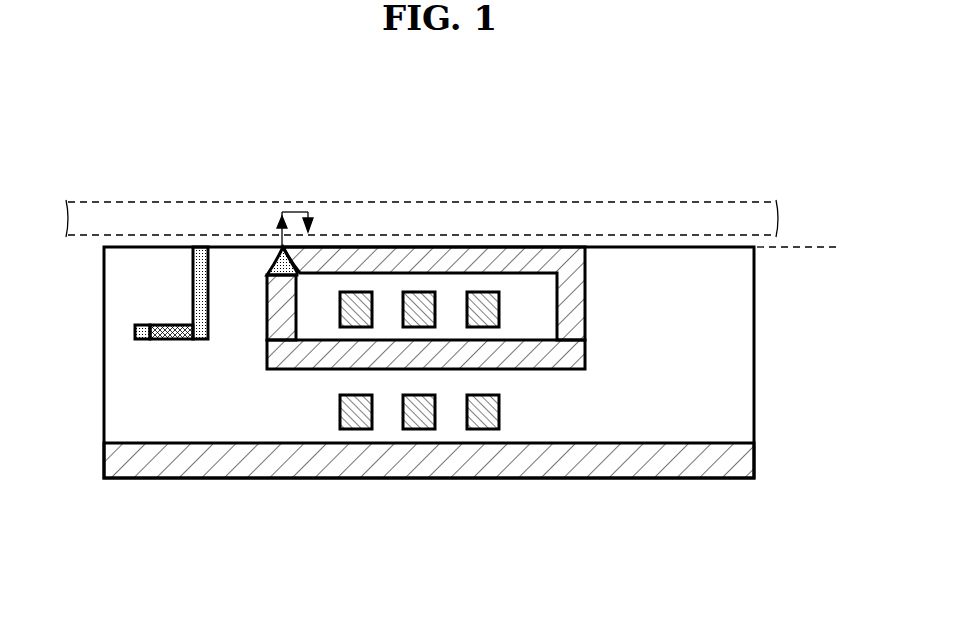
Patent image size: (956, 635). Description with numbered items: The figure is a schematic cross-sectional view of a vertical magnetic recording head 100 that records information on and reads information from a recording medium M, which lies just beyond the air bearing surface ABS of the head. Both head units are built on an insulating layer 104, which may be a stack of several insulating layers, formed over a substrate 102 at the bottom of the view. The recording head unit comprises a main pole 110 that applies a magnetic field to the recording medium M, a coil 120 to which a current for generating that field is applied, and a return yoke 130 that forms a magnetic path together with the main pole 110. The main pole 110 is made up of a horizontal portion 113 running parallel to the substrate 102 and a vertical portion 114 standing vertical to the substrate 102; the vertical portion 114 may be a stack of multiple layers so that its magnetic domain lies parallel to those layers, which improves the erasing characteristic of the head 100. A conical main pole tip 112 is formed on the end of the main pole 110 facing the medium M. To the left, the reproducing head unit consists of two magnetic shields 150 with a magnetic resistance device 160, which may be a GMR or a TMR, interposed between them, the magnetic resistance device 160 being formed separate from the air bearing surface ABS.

The vertical magnetic recording head 100 is at (107, 173).
The substrate 102 is at (745, 468).
The insulating layer 104 is at (745, 362).
The main pole 110 is at (369, 425).
The main pole tip 112 is at (279, 249).
The horizontal portion 113 is at (312, 362).
The vertical portion 114 is at (265, 340).
The coil 120 is at (473, 393).
The return yoke 130 is at (502, 263).
The magnetic shields 150 is at (142, 326).
The magnetic resistance device 160 is at (163, 341).
The recording medium M is at (713, 202).
The air bearing surface ABS is at (805, 247).